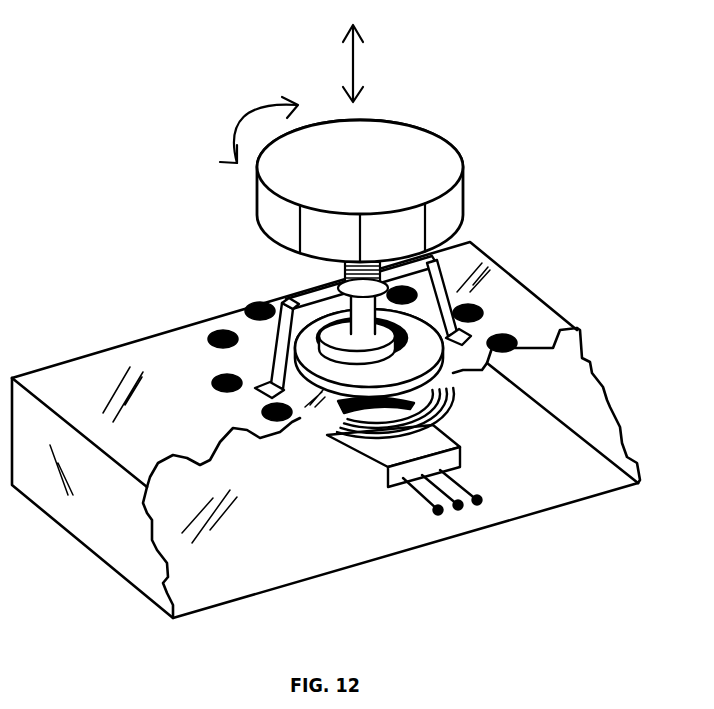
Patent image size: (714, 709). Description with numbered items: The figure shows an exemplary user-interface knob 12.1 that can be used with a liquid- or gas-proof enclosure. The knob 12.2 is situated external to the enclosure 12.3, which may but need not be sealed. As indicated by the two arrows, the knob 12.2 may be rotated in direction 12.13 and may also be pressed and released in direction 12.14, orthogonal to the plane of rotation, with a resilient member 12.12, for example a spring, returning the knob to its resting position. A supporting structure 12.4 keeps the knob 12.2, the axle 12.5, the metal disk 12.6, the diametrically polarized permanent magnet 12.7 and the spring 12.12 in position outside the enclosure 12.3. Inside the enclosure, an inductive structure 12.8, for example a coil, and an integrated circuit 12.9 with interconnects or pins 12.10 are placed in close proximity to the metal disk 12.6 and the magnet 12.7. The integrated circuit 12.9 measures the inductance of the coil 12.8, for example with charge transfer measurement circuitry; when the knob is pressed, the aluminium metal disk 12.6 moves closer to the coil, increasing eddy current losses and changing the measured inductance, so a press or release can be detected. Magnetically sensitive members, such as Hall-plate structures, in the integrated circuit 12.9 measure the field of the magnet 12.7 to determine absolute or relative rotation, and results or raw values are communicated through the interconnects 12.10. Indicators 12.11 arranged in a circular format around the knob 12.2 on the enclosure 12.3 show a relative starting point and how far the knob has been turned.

The user-interface knob 12.1 is at (127, 188).
The knob 12.2 is at (368, 170).
The enclosure 12.3 is at (85, 392).
The supporting structure 12.4 is at (283, 347).
The axle 12.5 is at (369, 332).
The metal disk 12.6 is at (385, 379).
The diametrically polarized permanent magnet 12.7 is at (397, 350).
The inductive structure 12.8 is at (318, 437).
The integrated circuit 12.9 is at (433, 454).
The interconnects or pins 12.10 is at (463, 483).
The indicators 12.11 is at (217, 389).
The resilient member 12.12 is at (347, 273).
The direction of rotation 12.13 is at (255, 129).
The press/release direction 12.14 is at (378, 63).